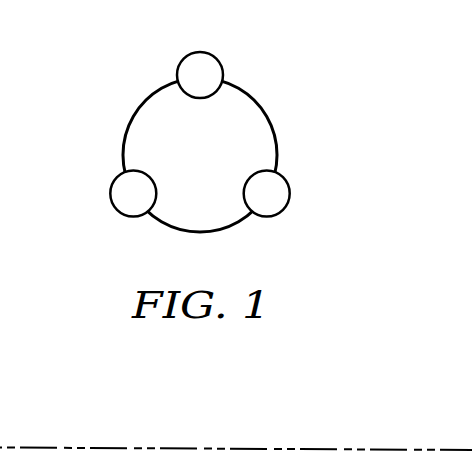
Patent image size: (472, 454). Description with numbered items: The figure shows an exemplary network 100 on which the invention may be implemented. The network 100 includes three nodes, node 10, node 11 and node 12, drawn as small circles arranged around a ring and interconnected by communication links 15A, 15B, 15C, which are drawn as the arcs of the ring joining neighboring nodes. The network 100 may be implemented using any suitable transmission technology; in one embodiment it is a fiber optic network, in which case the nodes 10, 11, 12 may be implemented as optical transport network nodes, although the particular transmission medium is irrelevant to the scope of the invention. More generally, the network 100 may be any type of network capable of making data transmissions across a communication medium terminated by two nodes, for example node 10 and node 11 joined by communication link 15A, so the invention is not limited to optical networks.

The network 100 is at (242, 145).
The node 10 is at (188, 63).
The node 11 is at (114, 190).
The node 12 is at (285, 190).
The communication link 15A is at (131, 109).
The communication link 15B is at (238, 223).
The communication link 15C is at (268, 113).